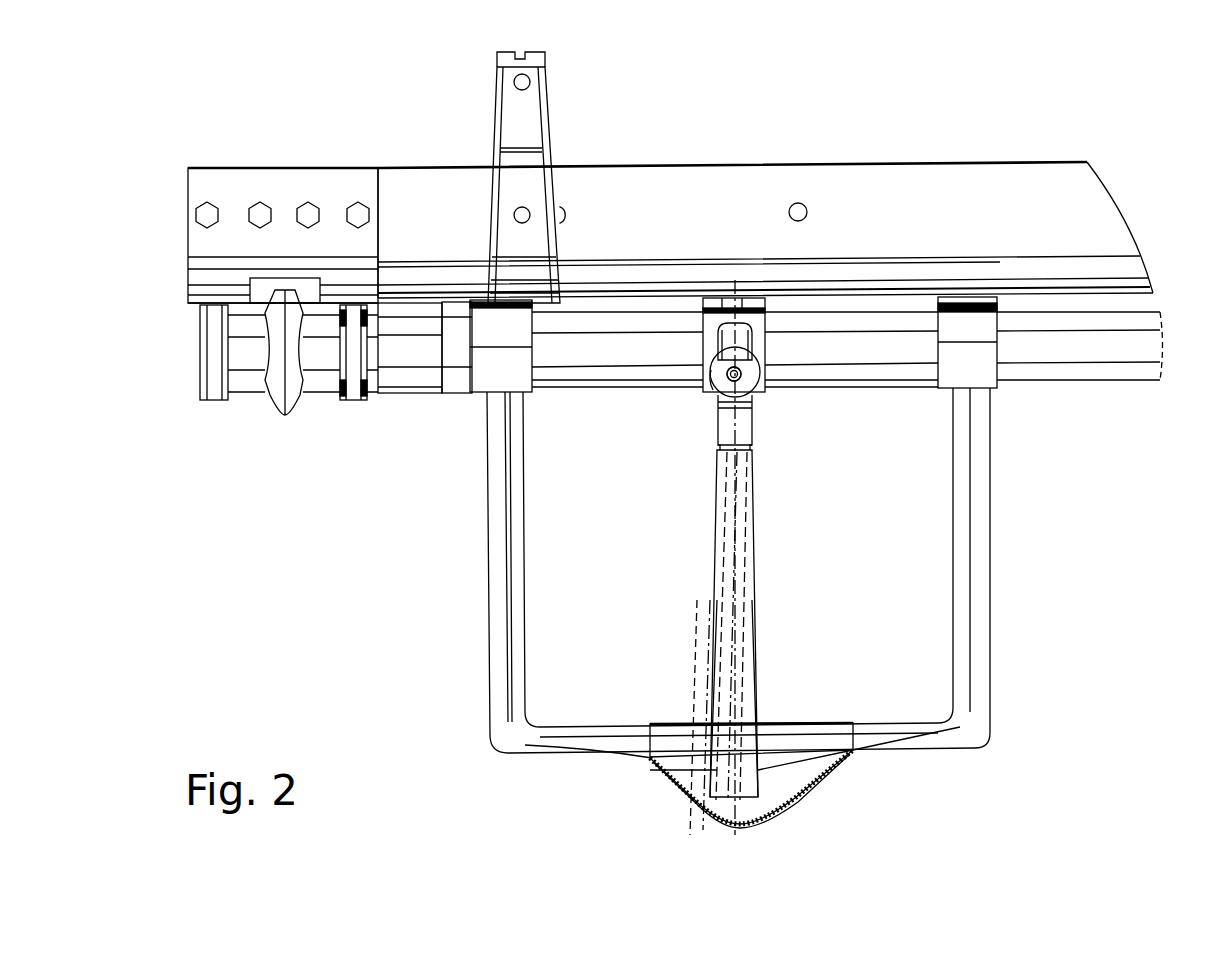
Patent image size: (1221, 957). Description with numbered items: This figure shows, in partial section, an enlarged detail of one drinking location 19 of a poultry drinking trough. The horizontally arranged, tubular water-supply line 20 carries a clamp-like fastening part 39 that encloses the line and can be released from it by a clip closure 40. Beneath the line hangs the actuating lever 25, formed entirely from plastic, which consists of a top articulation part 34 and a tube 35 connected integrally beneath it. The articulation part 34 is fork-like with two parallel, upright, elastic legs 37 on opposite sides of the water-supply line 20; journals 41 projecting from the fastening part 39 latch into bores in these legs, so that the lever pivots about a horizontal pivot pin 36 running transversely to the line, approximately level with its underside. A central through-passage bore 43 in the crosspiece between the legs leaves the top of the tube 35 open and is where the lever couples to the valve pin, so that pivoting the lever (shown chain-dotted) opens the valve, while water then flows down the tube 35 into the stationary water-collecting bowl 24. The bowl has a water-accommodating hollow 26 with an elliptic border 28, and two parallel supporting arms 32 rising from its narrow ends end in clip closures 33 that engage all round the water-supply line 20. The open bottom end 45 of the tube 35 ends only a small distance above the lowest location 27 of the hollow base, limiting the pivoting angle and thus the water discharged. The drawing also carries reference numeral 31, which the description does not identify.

The drinking location 19 is at (1114, 466).
The water-supply line 20 is at (1077, 357).
The water-collecting bowl 24 is at (1022, 679).
The actuating lever 25 is at (790, 525).
The water-accommodating hollow 26 is at (812, 778).
The lowest location 27 is at (757, 820).
The elliptic border 28 is at (578, 718).
The rod 31 is at (748, 663).
The supporting arms 32 is at (500, 643).
The clip closure 33 is at (980, 363).
The articulation part 34 is at (755, 429).
The tube 35 is at (750, 613).
The pivot pin 36 is at (742, 371).
The legs 37 is at (713, 370).
The fastening part 39 is at (780, 322).
The clip closure 40 is at (753, 300).
The journals 41 is at (733, 382).
The through-passage bore 43 is at (734, 374).
The bottom end 45 is at (700, 822).